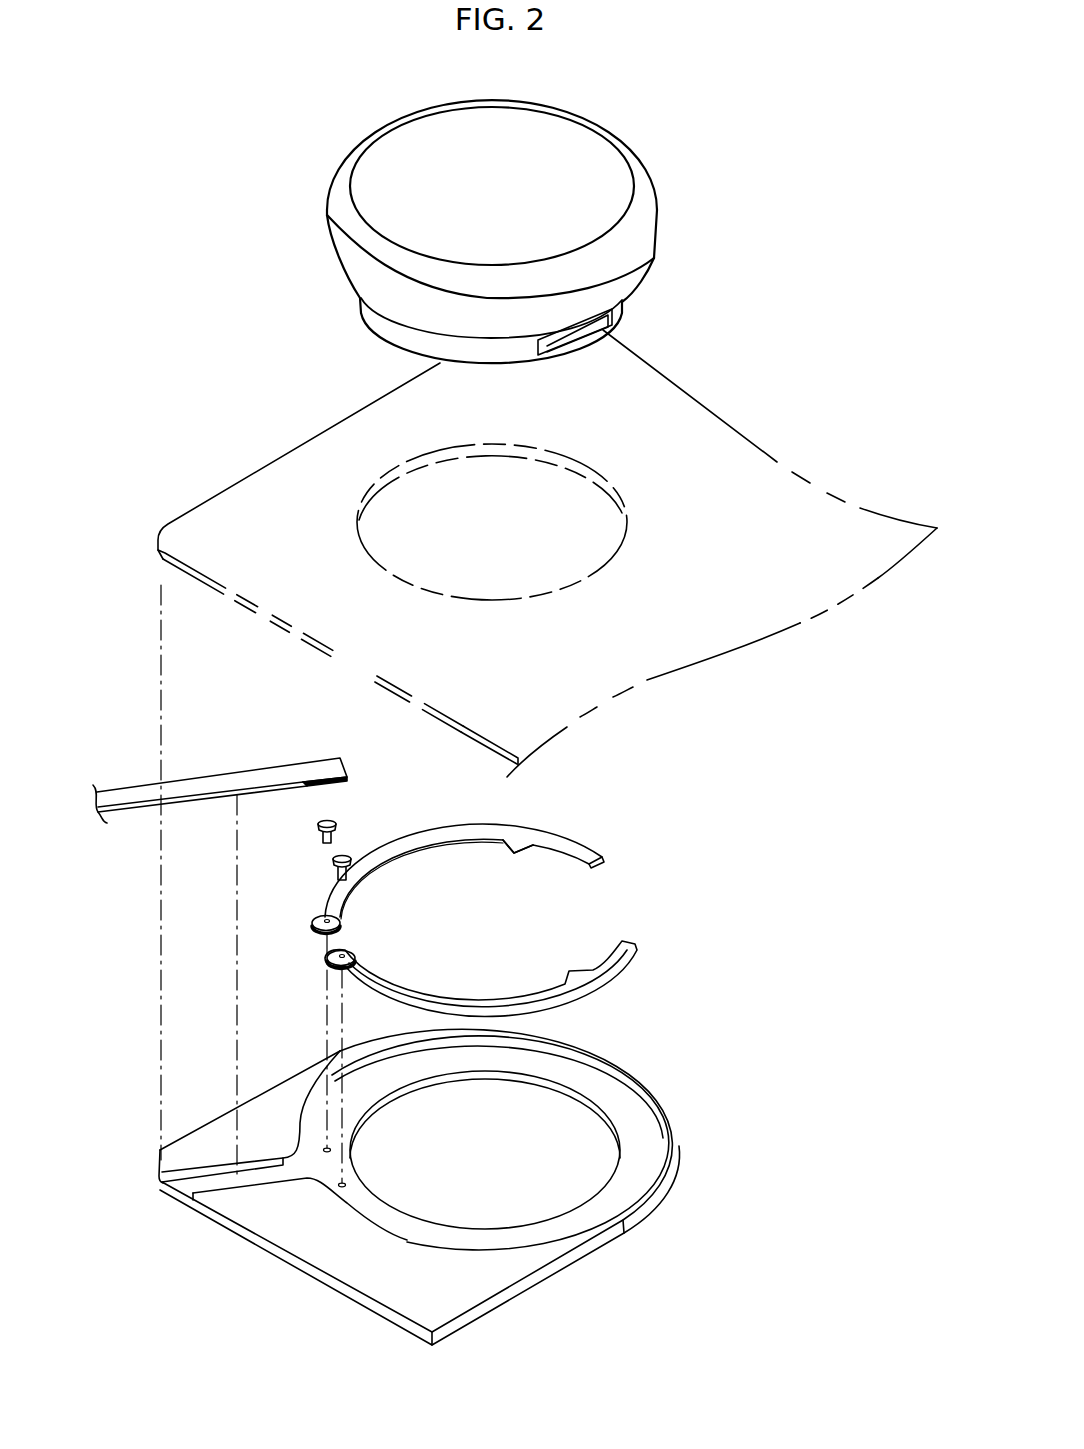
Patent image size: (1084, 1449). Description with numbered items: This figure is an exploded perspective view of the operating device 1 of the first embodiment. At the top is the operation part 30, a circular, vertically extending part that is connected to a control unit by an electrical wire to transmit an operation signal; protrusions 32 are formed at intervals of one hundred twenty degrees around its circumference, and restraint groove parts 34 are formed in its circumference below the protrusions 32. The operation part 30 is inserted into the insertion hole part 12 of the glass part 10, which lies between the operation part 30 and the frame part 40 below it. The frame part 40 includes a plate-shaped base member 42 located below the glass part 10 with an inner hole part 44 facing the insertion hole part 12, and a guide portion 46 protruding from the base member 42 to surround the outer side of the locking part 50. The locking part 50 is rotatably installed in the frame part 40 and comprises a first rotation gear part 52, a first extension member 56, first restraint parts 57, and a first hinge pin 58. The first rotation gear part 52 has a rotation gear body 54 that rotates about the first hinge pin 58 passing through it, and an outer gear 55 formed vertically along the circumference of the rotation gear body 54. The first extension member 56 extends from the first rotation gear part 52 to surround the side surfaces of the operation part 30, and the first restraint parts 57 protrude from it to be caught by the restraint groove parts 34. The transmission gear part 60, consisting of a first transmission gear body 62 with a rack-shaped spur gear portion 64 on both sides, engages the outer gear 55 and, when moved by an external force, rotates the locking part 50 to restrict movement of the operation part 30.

The operating device 1 is at (746, 186).
The glass part 10 is at (547, 547).
The insertion hole part 12 is at (571, 535).
The operation part 30 is at (536, 231).
The protrusions 32 is at (612, 253).
The restraint groove parts 34 is at (603, 328).
The frame part 40 is at (419, 1197).
The base member 42 is at (360, 1197).
The inner hole part 44 is at (452, 1190).
The guide portion 46 is at (288, 1218).
The locking part 50 is at (407, 879).
The first rotation gear part 52 is at (231, 929).
The rotation gear body 54 is at (313, 918).
The outer gear 55 is at (316, 934).
The first extension member 56 is at (464, 836).
The first restraint parts 57 is at (517, 853).
The first hinge pin 58 is at (343, 858).
The transmission gear part 60 is at (243, 735).
The first transmission gear body 62 is at (203, 788).
The spur gear portion 64 is at (383, 762).